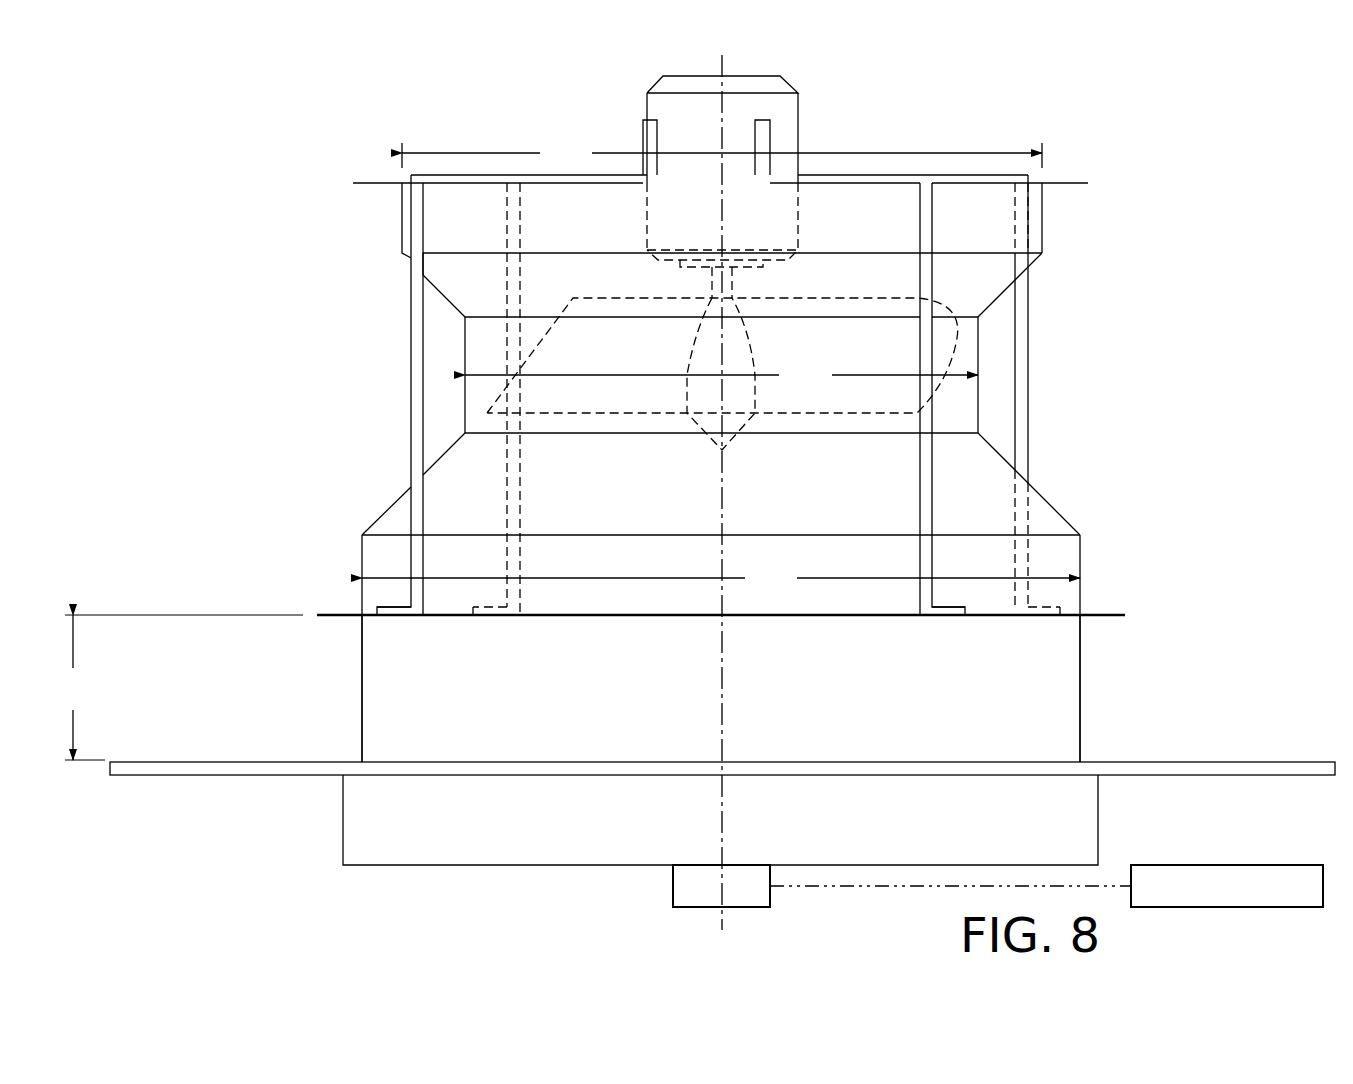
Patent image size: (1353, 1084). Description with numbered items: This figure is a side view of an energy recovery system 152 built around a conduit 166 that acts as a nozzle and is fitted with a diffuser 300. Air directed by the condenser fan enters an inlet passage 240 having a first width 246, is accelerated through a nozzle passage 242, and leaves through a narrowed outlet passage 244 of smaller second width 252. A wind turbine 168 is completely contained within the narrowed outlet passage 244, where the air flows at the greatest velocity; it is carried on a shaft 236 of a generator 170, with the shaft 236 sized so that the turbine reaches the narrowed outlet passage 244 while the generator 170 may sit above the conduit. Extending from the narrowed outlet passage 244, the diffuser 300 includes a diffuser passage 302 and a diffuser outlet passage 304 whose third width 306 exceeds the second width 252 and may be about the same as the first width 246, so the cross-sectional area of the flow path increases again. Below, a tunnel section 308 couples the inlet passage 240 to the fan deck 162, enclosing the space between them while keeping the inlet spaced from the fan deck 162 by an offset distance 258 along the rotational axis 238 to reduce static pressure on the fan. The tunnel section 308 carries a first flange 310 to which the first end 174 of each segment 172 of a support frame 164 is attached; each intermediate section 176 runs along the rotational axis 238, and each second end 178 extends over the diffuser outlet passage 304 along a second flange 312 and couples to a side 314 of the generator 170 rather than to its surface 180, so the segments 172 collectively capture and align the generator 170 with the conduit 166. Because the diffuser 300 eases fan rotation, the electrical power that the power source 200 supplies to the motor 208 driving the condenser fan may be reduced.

The energy recovery system 152 is at (1127, 405).
The fan deck 162 is at (248, 768).
The support frame 164 is at (365, 402).
The conduit 166 is at (1043, 535).
The wind turbine 168 is at (598, 390).
The generator 170 is at (785, 142).
The segment 172 is at (417, 212).
The first end 174 is at (398, 613).
The intermediate section 176 is at (417, 341).
The second end 178 is at (645, 130).
The surface 180 is at (695, 75).
The power source 200 is at (1272, 865).
The motor 208 is at (672, 888).
The shaft 236 is at (735, 283).
The rotational axis 238 is at (720, 918).
The inlet passage 240 is at (1063, 553).
The nozzle passage 242 is at (988, 477).
The narrowed outlet passage 244 is at (963, 410).
The first width 246 is at (721, 579).
The second width 252 is at (721, 376).
The offset distance 258 is at (176, 687).
The diffuser 300 is at (1107, 202).
The diffuser passage 302 is at (452, 283).
The diffuser outlet passage 304 is at (435, 215).
The third width 306 is at (722, 154).
The tunnel section 308 is at (1063, 712).
The first flange 310 is at (337, 615).
The second flange 312 is at (1073, 182).
The side 314 is at (687, 118).